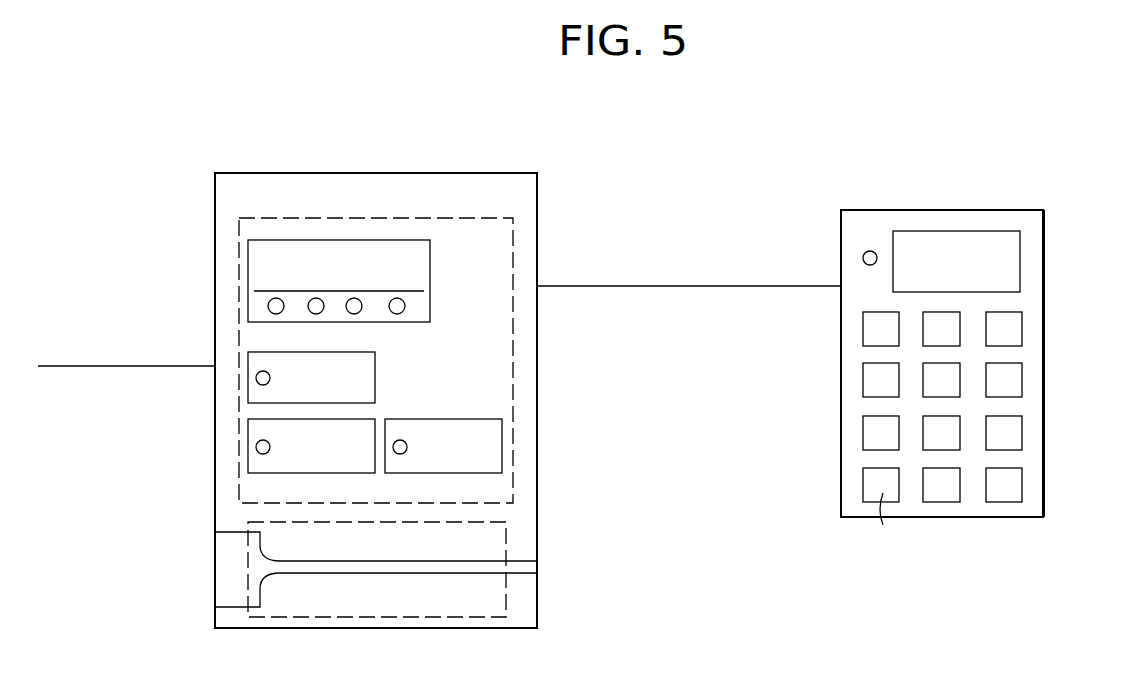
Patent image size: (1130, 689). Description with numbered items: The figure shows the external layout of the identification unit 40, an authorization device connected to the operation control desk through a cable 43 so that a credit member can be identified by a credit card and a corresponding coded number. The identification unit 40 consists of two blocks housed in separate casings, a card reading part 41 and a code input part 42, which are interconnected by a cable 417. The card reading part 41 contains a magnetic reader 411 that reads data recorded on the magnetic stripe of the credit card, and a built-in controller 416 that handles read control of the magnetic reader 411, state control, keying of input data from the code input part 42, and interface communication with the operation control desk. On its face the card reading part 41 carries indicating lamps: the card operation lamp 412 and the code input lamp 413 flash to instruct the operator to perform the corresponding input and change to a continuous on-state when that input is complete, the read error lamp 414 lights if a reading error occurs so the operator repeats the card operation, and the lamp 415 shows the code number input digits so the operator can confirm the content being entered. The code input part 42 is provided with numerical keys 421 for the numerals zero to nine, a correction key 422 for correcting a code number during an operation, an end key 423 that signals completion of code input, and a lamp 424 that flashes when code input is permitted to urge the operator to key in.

The identification unit 40 is at (1055, 245).
The card reading part 41 is at (520, 210).
The code input part 42 is at (1030, 222).
The cable 43 is at (82, 366).
The magnetic reader 411 is at (485, 603).
The card operation lamp 412 is at (250, 453).
The code input lamp 413 is at (253, 347).
The read error lamp 414 is at (502, 445).
The code number input digit lamp 415 is at (250, 270).
The built-in controller 416 is at (507, 370).
The cable 417 is at (663, 287).
The numerical keys 421 is at (843, 372).
The correction key 422 is at (862, 489).
The end key 423 is at (1005, 502).
The lamp 424 is at (863, 257).